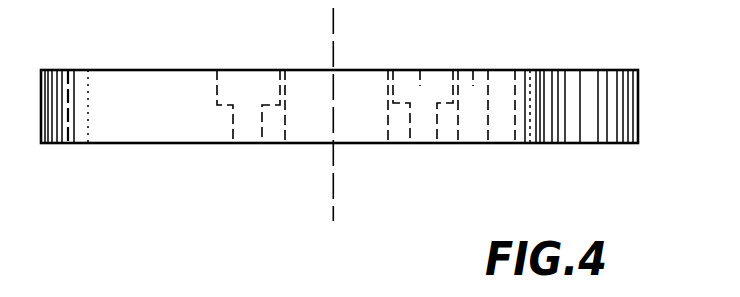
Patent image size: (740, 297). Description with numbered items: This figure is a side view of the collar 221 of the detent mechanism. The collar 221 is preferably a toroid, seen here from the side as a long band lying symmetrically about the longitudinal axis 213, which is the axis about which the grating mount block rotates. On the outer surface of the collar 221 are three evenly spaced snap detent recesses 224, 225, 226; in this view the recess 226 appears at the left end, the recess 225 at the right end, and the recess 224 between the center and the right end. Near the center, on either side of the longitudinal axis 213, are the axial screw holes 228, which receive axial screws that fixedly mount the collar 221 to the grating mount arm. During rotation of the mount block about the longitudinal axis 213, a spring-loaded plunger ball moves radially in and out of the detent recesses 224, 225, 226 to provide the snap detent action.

The longitudinal axis 213 is at (336, 183).
The collar 221 is at (162, 144).
The snap detent recess 224 is at (471, 55).
The snap detent recess 225 is at (534, 70).
The snap detent recess 226 is at (50, 108).
The axial screw hole 228 is at (413, 60).